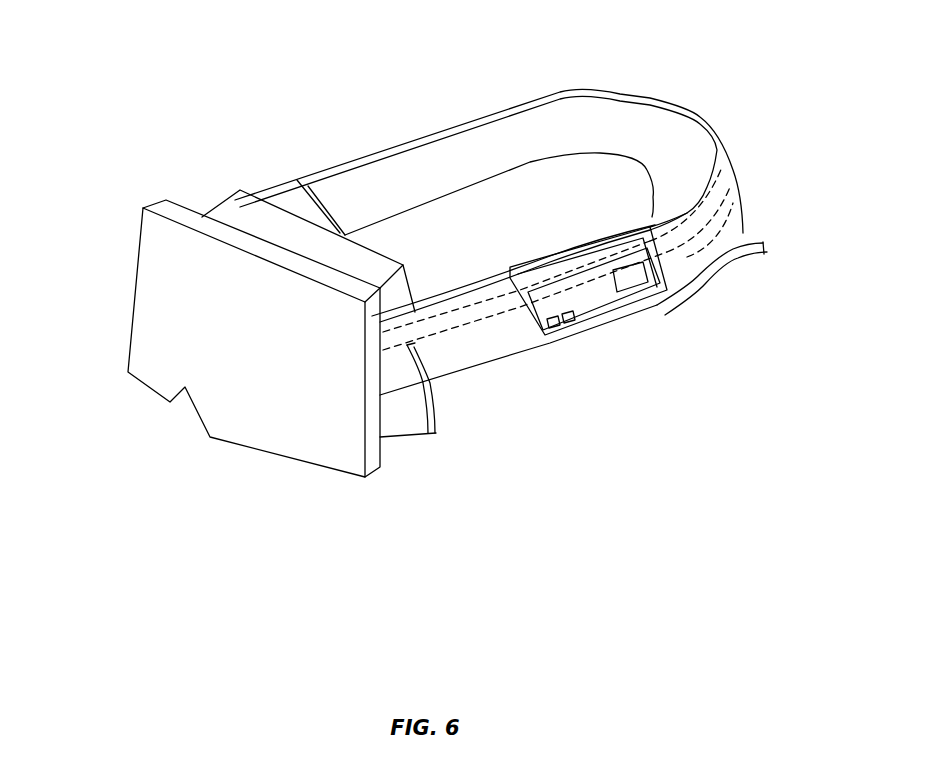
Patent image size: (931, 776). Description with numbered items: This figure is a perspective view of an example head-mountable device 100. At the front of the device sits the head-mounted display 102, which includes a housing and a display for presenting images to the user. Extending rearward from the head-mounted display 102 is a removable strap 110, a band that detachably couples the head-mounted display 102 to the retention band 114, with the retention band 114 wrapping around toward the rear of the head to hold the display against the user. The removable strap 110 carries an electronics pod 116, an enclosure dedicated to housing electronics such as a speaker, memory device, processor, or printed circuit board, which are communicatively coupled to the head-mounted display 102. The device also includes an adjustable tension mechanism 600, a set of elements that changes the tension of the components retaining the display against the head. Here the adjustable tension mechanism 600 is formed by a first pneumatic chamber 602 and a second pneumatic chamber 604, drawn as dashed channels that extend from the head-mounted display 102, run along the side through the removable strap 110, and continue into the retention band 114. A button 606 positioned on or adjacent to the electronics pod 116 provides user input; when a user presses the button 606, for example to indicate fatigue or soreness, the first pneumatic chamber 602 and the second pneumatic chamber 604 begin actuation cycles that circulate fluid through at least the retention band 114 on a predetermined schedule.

The head-mountable device 100 is at (153, 158).
The head-mounted display 102 is at (127, 356).
The removable strap 110 is at (468, 352).
The retention band 114 is at (615, 127).
The electronics pod 116 is at (603, 305).
The adjustable tension mechanism 600 is at (745, 172).
The first pneumatic chamber 602 is at (428, 435).
The second pneumatic chamber 604 is at (458, 312).
The button 606 is at (562, 328).